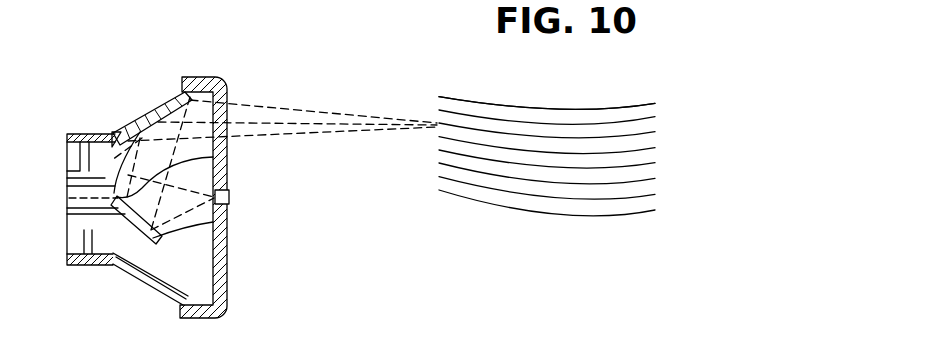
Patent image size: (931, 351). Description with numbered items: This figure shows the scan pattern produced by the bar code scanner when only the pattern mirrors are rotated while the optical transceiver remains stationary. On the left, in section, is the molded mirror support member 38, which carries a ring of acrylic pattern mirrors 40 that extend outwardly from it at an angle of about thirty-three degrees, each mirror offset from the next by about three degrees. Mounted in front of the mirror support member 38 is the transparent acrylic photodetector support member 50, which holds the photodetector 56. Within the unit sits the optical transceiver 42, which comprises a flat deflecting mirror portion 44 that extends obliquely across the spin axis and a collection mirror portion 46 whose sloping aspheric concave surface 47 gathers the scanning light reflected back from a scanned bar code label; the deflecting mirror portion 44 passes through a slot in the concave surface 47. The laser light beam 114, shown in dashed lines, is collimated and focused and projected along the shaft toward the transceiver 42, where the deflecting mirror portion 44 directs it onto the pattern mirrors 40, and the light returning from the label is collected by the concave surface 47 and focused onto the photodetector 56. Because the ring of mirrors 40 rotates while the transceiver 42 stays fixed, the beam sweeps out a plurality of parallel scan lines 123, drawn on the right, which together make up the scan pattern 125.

The mirror support member 38 is at (83, 133).
The pattern mirrors 40 is at (160, 106).
The optical transceiver 42 is at (140, 231).
The deflecting mirror portion 44 is at (213, 158).
The collection mirror portion 46 is at (134, 121).
The aspheric concave surface 47 is at (205, 227).
The photodetector support member 50 is at (225, 288).
The photodetector 56 is at (230, 197).
The laser light beam 114 is at (308, 107).
The parallel scan lines 123 is at (638, 214).
The scan pattern 125 is at (631, 93).